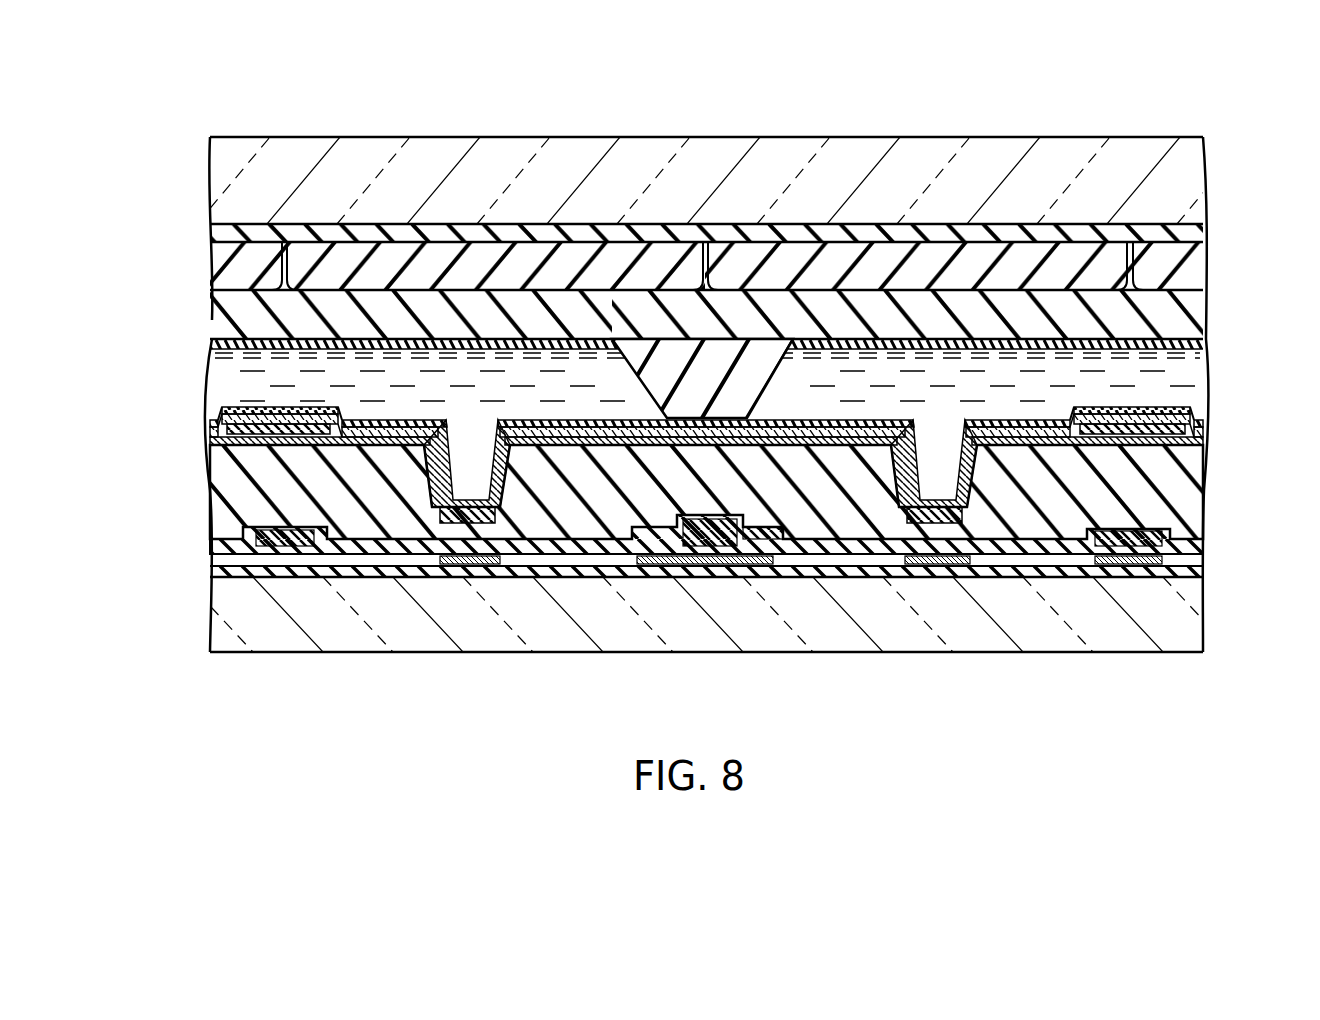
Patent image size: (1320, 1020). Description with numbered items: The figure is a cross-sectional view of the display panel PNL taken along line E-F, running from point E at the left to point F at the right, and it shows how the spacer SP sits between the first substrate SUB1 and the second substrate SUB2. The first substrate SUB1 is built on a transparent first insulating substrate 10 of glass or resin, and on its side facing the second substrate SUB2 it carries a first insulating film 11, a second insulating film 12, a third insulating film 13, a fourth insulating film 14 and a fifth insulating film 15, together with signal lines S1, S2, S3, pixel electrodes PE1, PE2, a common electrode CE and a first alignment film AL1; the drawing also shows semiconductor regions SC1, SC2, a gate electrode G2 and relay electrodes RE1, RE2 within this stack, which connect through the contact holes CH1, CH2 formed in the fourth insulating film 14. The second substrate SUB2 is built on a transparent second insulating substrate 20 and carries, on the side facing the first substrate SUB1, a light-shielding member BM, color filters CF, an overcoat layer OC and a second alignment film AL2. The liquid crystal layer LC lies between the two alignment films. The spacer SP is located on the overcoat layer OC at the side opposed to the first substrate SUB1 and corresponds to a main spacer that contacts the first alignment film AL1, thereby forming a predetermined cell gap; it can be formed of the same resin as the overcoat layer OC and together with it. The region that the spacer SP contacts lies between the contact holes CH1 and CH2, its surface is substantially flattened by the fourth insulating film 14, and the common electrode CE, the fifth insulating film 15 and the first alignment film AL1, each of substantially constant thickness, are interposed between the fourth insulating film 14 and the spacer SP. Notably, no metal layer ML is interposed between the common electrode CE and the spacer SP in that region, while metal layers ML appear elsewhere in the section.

The display panel PNL is at (1206, 134).
The second insulating substrate 20 is at (1190, 189).
The light-shielding member BM is at (1200, 229).
The color filter CF is at (1180, 275).
The overcoat layer OC is at (1190, 318).
The second alignment film AL2 is at (1205, 344).
The spacer SP is at (757, 380).
The liquid crystal layer LC is at (1205, 383).
The first alignment film AL1 is at (1205, 418).
The fifth insulating film 15 is at (1200, 430).
The common electrode CE is at (216, 440).
The fourth insulating film 14 is at (1193, 500).
The third insulating film 13 is at (1193, 547).
The second insulating film 12 is at (1198, 560).
The first insulating film 11 is at (1198, 572).
The first insulating substrate 10 is at (1190, 627).
The first substrate SUB1 is at (210, 486).
The second substrate SUB2 is at (206, 242).
The metal layer ML is at (240, 408).
The pixel electrode PE1 is at (412, 427).
The pixel electrode PE2 is at (1032, 427).
The contact hole CH1 is at (476, 460).
The contact hole CH2 is at (943, 460).
The signal line S1 is at (278, 562).
The signal line S2 is at (767, 531).
The signal line S3 is at (1135, 547).
The first relay electrode RE1 is at (405, 577).
The second relay electrode RE2 is at (872, 577).
The first semiconductor layer SC1 is at (478, 564).
The second semiconductor layer SC2 is at (935, 564).
The second gate electrode G2 is at (700, 556).
The line E-F end point E is at (214, 663).
The line E-F end point F is at (1203, 662).